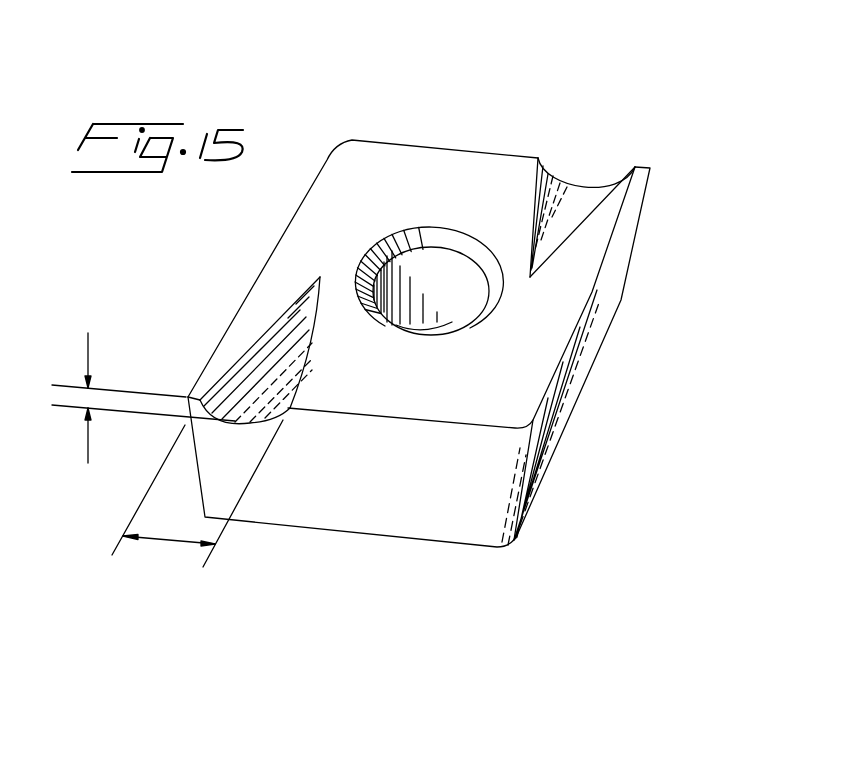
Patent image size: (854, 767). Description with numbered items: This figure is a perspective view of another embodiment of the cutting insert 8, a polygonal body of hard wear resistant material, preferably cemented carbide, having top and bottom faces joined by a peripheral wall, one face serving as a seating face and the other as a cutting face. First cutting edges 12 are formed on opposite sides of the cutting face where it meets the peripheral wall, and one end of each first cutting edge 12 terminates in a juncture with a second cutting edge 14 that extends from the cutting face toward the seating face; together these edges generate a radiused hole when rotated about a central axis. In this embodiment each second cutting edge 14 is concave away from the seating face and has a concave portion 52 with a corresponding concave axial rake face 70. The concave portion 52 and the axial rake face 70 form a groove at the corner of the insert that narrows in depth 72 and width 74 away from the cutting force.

The cutting insert 8 is at (357, 168).
The first cutting edges 12 is at (443, 148).
The second cutting edge 14 is at (570, 163).
The concave portion 52 is at (578, 185).
The concave axial rake face 70 is at (558, 205).
The depth 72 is at (143, 383).
The width 74 is at (165, 540).